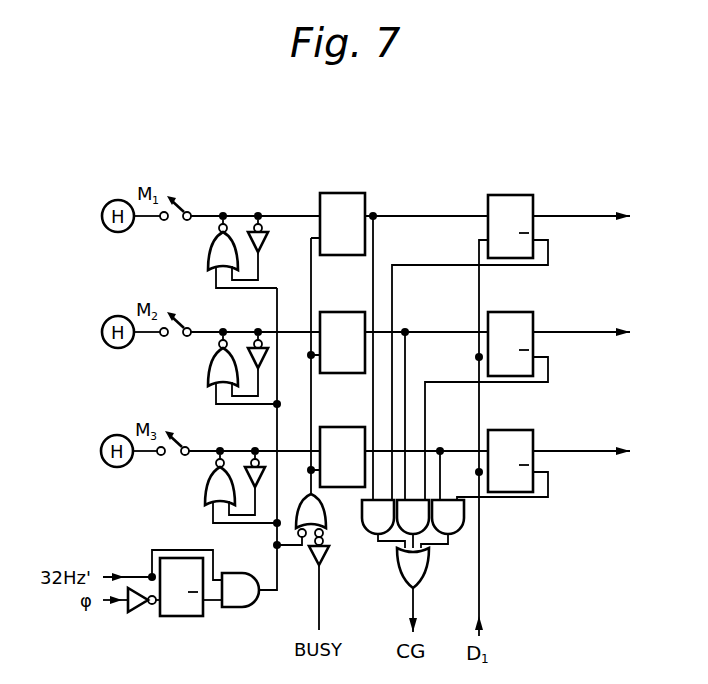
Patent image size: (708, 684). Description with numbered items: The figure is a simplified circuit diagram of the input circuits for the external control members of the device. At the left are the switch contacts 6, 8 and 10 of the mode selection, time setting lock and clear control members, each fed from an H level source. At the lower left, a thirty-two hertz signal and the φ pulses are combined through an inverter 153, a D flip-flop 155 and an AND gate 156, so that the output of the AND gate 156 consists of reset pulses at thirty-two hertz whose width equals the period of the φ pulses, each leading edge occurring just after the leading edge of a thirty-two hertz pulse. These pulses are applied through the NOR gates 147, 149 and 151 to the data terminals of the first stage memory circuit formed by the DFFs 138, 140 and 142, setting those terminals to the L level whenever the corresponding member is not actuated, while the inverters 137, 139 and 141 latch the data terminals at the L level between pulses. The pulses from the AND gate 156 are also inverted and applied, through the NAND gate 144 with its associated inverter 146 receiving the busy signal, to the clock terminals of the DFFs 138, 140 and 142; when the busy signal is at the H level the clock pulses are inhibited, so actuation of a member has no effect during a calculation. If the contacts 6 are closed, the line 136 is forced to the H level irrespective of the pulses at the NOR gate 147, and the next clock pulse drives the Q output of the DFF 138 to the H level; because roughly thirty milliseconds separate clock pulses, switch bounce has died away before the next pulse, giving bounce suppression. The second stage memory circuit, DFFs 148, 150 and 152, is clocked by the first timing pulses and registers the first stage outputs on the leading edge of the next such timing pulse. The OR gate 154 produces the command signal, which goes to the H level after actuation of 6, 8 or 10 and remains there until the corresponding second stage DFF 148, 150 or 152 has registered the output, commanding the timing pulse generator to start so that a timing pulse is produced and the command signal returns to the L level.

The switch contacts of mode selection control member 6 is at (174, 220).
The switch contacts of time setting lock control member 8 is at (174, 336).
The switch contacts of clear control member 10 is at (172, 455).
The line 136 is at (219, 211).
The inverter 137 is at (268, 240).
The DFF 138 is at (343, 193).
The inverter 139 is at (253, 341).
The DFF 140 is at (342, 312).
The inverter 141 is at (250, 460).
The DFF 142 is at (339, 427).
The NAND gate 144 is at (322, 512).
The inverter 146 is at (325, 562).
The NOR gate 147 is at (208, 264).
The DFF 148 is at (515, 195).
The NOR gate 149 is at (208, 377).
The DFF 150 is at (519, 312).
The NOR gate 151 is at (206, 497).
The DFF 152 is at (515, 430).
The inverter 153 is at (136, 614).
The OR gate 154 is at (430, 554).
The flip-flop 155 is at (186, 617).
The AND gate 156 is at (243, 608).